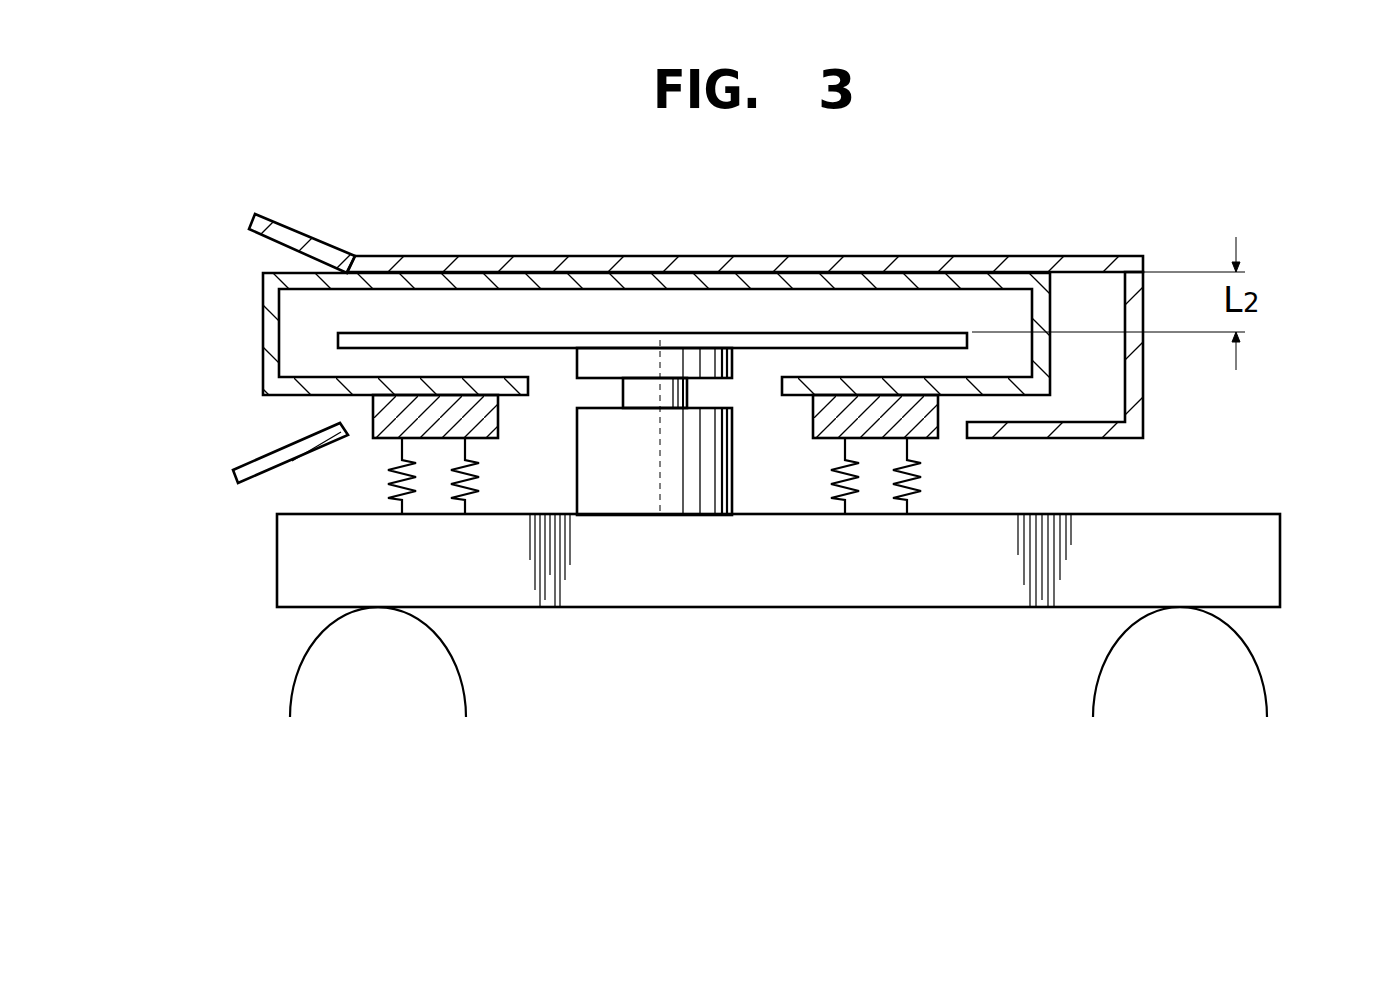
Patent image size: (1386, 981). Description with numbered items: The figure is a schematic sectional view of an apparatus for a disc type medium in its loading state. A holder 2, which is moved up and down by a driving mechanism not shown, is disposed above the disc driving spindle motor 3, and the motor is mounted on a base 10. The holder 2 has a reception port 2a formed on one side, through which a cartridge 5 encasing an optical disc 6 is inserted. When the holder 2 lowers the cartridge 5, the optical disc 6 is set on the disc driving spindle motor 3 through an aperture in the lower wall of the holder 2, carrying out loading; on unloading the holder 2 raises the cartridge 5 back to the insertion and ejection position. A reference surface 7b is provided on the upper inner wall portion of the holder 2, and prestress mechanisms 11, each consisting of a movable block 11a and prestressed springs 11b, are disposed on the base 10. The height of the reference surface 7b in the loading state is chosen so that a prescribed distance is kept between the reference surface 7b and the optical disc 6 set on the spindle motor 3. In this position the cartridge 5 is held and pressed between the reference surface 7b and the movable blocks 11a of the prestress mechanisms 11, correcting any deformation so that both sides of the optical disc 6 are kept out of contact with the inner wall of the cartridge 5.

The holder 2 is at (500, 260).
The reception port 2a is at (297, 240).
The disc driving spindle motor 3 is at (630, 360).
The cartridge 5 is at (267, 322).
The optical disc 6 is at (737, 335).
The reference surface 7b is at (1093, 273).
The base 10 is at (1267, 552).
The prestress mechanism 11 is at (523, 559).
The movable block 11a is at (380, 432).
The prestressed spring 11b is at (390, 475).